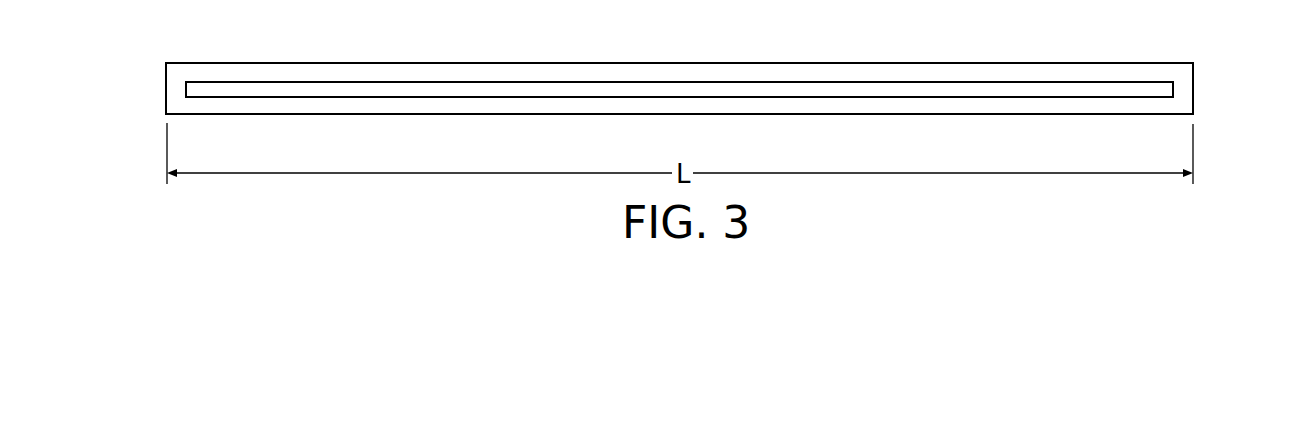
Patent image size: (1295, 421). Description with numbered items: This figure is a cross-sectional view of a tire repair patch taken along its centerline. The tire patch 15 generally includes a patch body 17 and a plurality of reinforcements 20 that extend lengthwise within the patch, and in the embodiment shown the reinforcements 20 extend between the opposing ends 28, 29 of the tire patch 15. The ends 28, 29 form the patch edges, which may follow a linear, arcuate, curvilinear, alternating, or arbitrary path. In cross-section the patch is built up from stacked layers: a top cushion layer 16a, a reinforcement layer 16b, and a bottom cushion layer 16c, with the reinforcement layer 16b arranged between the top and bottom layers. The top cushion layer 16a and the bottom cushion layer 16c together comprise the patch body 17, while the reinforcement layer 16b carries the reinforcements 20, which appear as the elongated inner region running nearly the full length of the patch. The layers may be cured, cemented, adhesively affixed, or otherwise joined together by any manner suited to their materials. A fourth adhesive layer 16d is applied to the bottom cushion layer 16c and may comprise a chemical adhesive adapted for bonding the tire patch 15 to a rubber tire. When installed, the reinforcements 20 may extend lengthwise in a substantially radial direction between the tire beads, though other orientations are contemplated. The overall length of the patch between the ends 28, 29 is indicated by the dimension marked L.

The tire patch 15 is at (1176, 13).
The patch body 17 is at (983, 56).
The reinforcements 20 is at (806, 88).
The top cushion layer 16a is at (461, 72).
The reinforcement layer 16b is at (310, 88).
The bottom cushion layer 16c is at (458, 105).
The adhesive layer 16d is at (961, 130).
The end 28 is at (158, 96).
The end 29 is at (1203, 91).